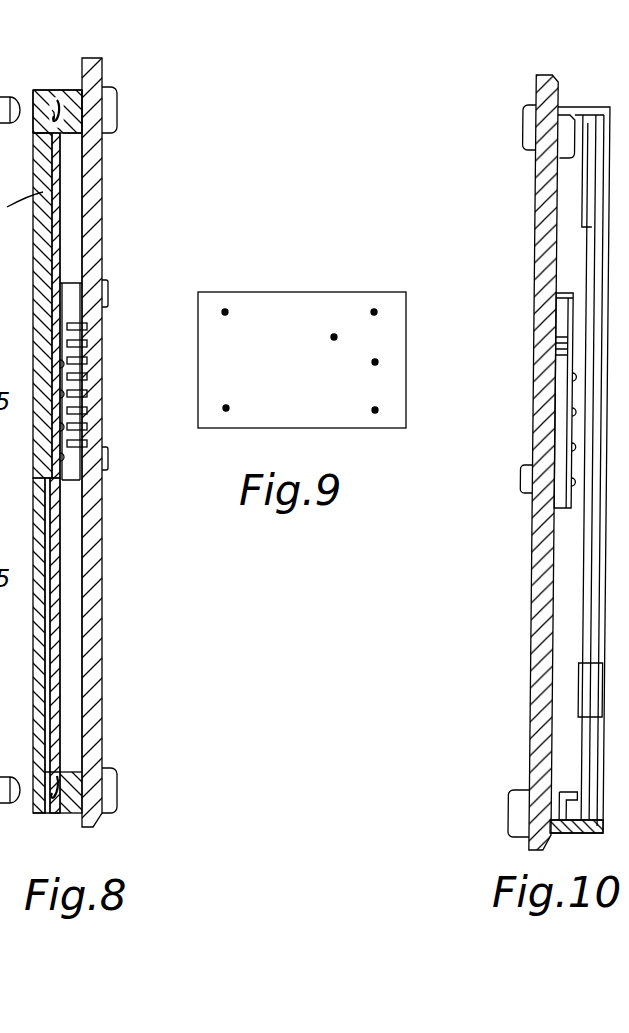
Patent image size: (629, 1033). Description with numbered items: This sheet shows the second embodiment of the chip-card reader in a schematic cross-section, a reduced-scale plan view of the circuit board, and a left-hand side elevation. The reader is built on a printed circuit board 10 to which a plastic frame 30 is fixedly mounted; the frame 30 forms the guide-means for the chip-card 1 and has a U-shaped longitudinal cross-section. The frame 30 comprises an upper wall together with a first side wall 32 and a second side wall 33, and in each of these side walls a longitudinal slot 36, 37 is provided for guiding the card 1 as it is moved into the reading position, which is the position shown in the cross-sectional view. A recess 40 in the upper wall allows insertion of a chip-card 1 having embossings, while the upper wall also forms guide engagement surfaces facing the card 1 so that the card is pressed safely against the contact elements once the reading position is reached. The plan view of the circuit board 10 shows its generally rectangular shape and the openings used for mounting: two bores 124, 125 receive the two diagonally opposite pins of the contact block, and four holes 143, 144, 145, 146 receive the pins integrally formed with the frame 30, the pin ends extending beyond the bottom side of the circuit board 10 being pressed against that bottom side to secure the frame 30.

In FIG. 8, the chip-card 1 is at (58, 243).
In FIG. 8, the printed circuit board 10 is at (94, 183).
In FIG. 9, the printed circuit board 10 is at (300, 320).
In FIG. 10, the printed circuit board 10 is at (540, 222).
In FIG. 8, the frame 30 is at (68, 88).
In FIG. 8, the first side wall 32 is at (61, 97).
In FIG. 8, the second side wall 33 is at (58, 806).
In FIG. 8, the longitudinal slot 36 is at (52, 128).
In FIG. 10, the longitudinal slot 36 is at (578, 152).
In FIG. 8, the longitudinal slot 37 is at (56, 775).
In FIG. 10, the longitudinal slot 37 is at (575, 790).
In FIG. 8, the recess 40 is at (46, 610).
In FIG. 9, the bore 124 is at (333, 342).
In FIG. 9, the bore 125 is at (379, 362).
In FIG. 9, the hole 143 is at (378, 312).
In FIG. 9, the hole 144 is at (379, 410).
In FIG. 9, the hole 145 is at (227, 317).
In FIG. 9, the hole 146 is at (226, 408).